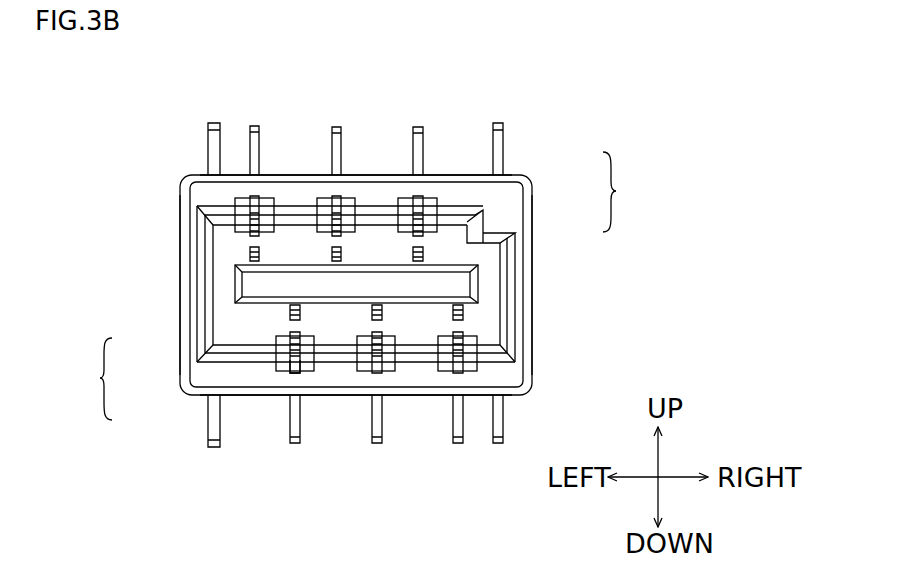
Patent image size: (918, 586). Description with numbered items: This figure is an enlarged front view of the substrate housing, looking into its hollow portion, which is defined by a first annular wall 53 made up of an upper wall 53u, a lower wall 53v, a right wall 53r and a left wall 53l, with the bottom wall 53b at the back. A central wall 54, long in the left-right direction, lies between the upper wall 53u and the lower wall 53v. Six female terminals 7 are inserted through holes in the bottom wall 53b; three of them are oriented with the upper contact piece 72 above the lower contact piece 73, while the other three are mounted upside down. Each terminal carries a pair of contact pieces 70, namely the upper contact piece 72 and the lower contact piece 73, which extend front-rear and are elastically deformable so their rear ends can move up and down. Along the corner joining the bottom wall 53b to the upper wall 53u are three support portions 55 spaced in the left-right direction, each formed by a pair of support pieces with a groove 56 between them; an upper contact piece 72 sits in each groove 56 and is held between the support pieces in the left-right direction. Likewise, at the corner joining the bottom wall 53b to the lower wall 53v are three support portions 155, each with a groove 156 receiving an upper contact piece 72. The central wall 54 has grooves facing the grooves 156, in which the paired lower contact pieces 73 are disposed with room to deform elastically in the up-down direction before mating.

The female terminal 7 is at (337, 118).
The first annular wall 53 is at (168, 194).
The upper wall 53u is at (305, 175).
The left wall 53l is at (180, 257).
The right wall 53r is at (532, 284).
The bottom wall 53b is at (488, 321).
The lower wall 53v is at (256, 396).
The central wall 54 is at (258, 284).
The support portion 55 is at (249, 198).
The groove 56 is at (413, 222).
The pair of contact pieces 70 is at (360, 286).
The upper contact piece 72 is at (428, 217).
The lower contact piece 73 is at (421, 253).
The support portion 155 is at (287, 372).
The groove 156 is at (295, 364).